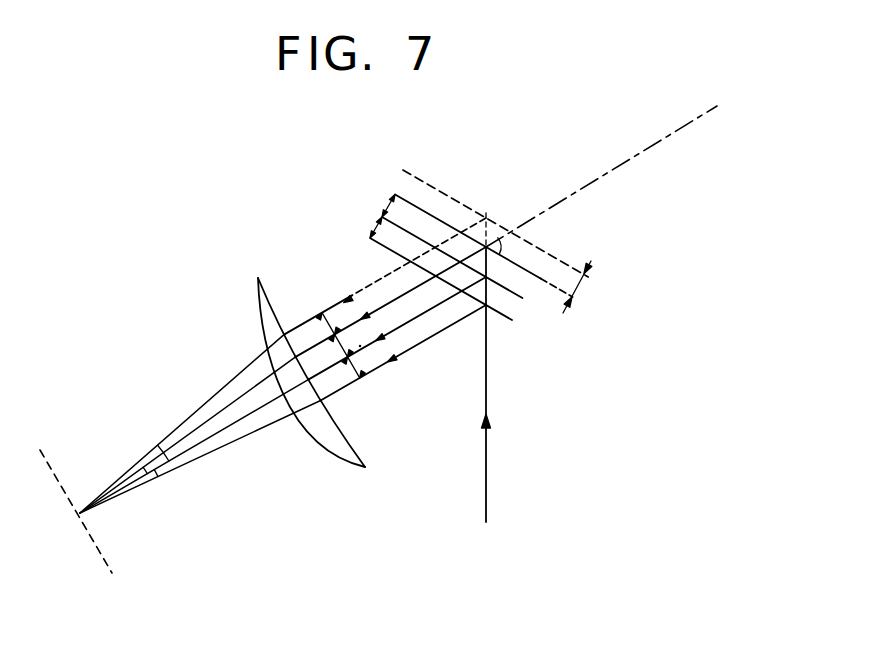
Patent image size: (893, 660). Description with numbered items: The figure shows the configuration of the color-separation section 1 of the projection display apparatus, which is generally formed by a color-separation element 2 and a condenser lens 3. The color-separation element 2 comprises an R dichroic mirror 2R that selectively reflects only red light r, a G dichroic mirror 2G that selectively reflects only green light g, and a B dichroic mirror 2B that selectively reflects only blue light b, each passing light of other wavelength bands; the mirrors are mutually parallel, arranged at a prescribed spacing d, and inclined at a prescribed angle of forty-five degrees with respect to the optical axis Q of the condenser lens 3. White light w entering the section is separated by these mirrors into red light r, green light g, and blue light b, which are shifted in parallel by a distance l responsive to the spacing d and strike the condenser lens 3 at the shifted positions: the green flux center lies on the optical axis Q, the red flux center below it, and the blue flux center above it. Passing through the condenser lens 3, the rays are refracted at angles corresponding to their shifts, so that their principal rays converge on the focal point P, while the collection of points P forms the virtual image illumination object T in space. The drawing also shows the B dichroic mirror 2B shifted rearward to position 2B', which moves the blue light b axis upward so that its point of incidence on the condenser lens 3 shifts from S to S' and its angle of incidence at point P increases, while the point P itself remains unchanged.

The color-separation section 1 is at (342, 143).
The color-separation element 2 is at (388, 162).
The B dichroic mirror 2B is at (516, 246).
The shifted position of B dichroic mirror 2B' is at (495, 207).
The G dichroic mirror 2G is at (522, 297).
The R dichroic mirror 2R is at (495, 313).
The condenser lens 3 is at (258, 279).
The spacing d is at (381, 229).
The white light w is at (489, 442).
The red light r is at (383, 365).
The green light g is at (405, 326).
The blue light b is at (411, 272).
The point of incidence of blue light on condenser lens S is at (256, 340).
The shifted point of incidence on condenser lens S' is at (351, 276).
The optical axis Q is at (326, 374).
The shift distance of light flux l is at (360, 346).
The focal point P is at (185, 441).
The virtual image illumination object T is at (108, 564).